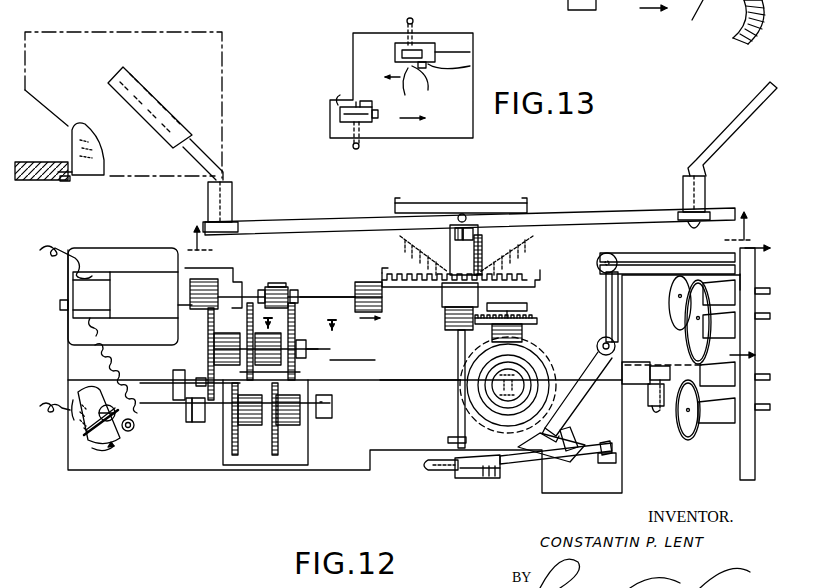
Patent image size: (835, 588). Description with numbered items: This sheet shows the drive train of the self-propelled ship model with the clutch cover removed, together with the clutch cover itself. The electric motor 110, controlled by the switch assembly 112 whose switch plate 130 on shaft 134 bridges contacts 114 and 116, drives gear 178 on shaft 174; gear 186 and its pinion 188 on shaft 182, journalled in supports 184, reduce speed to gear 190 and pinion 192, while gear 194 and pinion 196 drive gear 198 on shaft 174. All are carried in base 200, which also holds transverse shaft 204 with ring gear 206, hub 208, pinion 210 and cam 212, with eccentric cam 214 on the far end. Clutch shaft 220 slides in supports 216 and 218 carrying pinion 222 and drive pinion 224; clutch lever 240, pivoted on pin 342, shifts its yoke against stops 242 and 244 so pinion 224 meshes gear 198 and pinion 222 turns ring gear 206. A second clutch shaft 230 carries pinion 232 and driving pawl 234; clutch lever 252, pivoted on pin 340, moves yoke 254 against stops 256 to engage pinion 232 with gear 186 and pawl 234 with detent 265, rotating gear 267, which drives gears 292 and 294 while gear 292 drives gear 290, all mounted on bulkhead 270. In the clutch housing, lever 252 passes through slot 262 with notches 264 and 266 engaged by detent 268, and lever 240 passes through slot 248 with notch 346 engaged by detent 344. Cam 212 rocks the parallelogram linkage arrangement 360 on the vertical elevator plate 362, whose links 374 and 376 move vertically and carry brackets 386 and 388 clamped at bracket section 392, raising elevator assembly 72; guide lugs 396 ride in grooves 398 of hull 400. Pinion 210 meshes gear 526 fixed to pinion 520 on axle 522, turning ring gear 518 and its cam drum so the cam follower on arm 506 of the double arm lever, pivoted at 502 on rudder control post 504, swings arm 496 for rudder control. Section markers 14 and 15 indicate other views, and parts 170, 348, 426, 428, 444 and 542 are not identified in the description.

In FIG. 12, the section line 14 is at (307, 327).
In FIG. 12, the section line 15 is at (471, 223).
In FIG. 12, the elevator assembly 72 is at (220, 78).
In FIG. 12, the electric motor 110 is at (110, 262).
In FIG. 12, the switch assembly 112 is at (180, 262).
In FIG. 12, the fixed contact 114 is at (78, 412).
In FIG. 12, the contact 116 is at (130, 432).
In FIG. 12, the switch plate 130 is at (88, 440).
In FIG. 12, the switch shaft 134 is at (103, 398).
In FIG. 12, the gear frame 170 is at (212, 464).
In FIG. 12, the shaft 174 is at (318, 350).
In FIG. 12, the gear 178 is at (212, 328).
In FIG. 12, the shaft 182 is at (318, 418).
In FIG. 12, the supports 184 is at (228, 348).
In FIG. 12, the gear 186 is at (236, 455).
In FIG. 12, the pinion 188 is at (258, 428).
In FIG. 12, the gear 190 is at (280, 290).
In FIG. 12, the pinion 192 is at (296, 310).
In FIG. 12, the gear 194 is at (276, 430).
In FIG. 12, the pinion 196 is at (296, 426).
In FIG. 12, the gear 198 is at (300, 372).
In FIG. 12, the base 200 is at (413, 438).
In FIG. 12, the shaft 204 is at (466, 255).
In FIG. 12, the ring gear 206 is at (540, 278).
In FIG. 12, the hub 208 is at (444, 300).
In FIG. 12, the pinion 210 is at (447, 328).
In FIG. 12, the cam 212 is at (478, 258).
In FIG. 12, the eccentric cam 214 is at (452, 472).
In FIG. 12, the support 216 is at (196, 255).
In FIG. 12, the support 218 is at (300, 296).
In FIG. 12, the clutch shaft 220 is at (332, 288).
In FIG. 13, the pinion 222 is at (719, 22).
In FIG. 12, the pinion 222 is at (384, 301).
In FIG. 13, the drive pinion 224 is at (639, 15).
In FIG. 12, the drive pinion 224 is at (276, 284).
In FIG. 12, the clutch shaft 230 is at (418, 380).
In FIG. 12, the pinion 232 is at (206, 378).
In FIG. 12, the driving pawl 234 is at (658, 408).
In FIG. 13, the clutch lever 240 is at (418, 46).
In FIG. 12, the stop 242 is at (262, 292).
In FIG. 13, the stop 244 is at (600, 10).
In FIG. 12, the stop 244 is at (292, 288).
In FIG. 13, the slot 248 is at (440, 49).
In FIG. 13, the clutch lever 252 is at (340, 117).
In FIG. 12, the yoke 254 is at (190, 408).
In FIG. 12, the stops 256 is at (196, 384).
In FIG. 13, the slot 262 is at (378, 114).
In FIG. 13, the notch 264 is at (357, 104).
In FIG. 12, the detent 265 is at (684, 362).
In FIG. 13, the notch 266 is at (368, 103).
In FIG. 12, the gear 267 is at (710, 360).
In FIG. 13, the detent 268 is at (342, 104).
In FIG. 12, the bulkhead 270 is at (740, 468).
In FIG. 12, the gear 290 is at (682, 272).
In FIG. 12, the gear 292 is at (740, 280).
In FIG. 12, the gear 294 is at (690, 438).
In FIG. 13, the pin 340 is at (363, 142).
In FIG. 13, the pin 342 is at (397, 24).
In FIG. 13, the detent 344 is at (444, 82).
In FIG. 13, the notch 346 is at (421, 89).
In FIG. 13, the contact 348 is at (470, 66).
In FIG. 12, the parallelogram linkage arrangement 360 is at (606, 212).
In FIG. 12, the vertical elevator plate 362 is at (440, 228).
In FIG. 12, the link 374 is at (208, 166).
In FIG. 12, the link 376 is at (710, 210).
In FIG. 12, the bracket 386 is at (205, 155).
In FIG. 12, the bracket 388 is at (742, 104).
In FIG. 12, the bracket section 392 is at (132, 112).
In FIG. 12, the guide lugs 396 is at (72, 178).
In FIG. 12, the grooves 398 is at (63, 181).
In FIG. 12, the hull 400 is at (36, 162).
In FIG. 12, the slide block 426 is at (490, 478).
In FIG. 12, the link plate 428 is at (558, 450).
In FIG. 12, the stop 444 is at (616, 460).
In FIG. 12, the lever arm 496 is at (620, 310).
In FIG. 12, the pivot 502 is at (612, 340).
In FIG. 12, the rudder control post 504 is at (598, 350).
In FIG. 12, the lever arm 506 is at (582, 396).
In FIG. 12, the ring gear 518 is at (540, 358).
In FIG. 12, the pinion 520 is at (460, 346).
In FIG. 12, the axle 522 is at (512, 308).
In FIG. 12, the gear 526 is at (538, 320).
In FIG. 12, the drum hub 542 is at (482, 397).